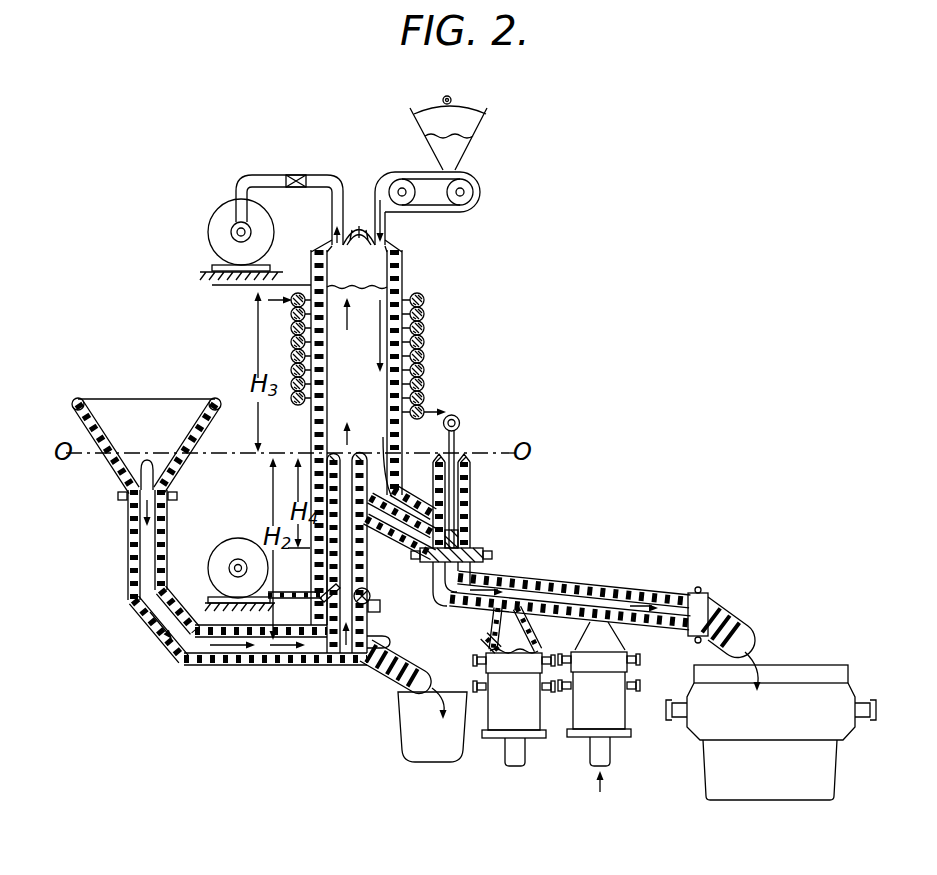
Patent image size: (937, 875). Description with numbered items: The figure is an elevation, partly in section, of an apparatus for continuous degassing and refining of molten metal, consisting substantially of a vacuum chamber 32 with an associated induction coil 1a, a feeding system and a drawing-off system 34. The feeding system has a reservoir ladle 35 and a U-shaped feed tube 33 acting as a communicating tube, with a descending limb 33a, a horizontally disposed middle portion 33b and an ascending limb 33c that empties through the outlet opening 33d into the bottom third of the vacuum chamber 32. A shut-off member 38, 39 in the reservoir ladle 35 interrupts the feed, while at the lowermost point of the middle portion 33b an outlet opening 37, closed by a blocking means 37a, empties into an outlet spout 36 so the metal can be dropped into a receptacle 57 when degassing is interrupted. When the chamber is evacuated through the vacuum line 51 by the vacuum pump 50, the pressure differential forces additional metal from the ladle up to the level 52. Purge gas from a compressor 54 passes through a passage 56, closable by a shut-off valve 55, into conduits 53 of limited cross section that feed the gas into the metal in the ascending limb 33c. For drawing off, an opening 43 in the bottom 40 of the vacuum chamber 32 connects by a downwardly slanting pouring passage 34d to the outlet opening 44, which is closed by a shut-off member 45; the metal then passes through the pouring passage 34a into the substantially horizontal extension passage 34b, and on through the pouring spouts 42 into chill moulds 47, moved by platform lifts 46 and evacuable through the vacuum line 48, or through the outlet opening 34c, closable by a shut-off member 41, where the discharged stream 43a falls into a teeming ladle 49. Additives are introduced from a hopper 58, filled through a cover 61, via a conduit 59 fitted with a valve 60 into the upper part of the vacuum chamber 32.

The induction coil 1a is at (425, 353).
The vacuum chamber 32 is at (404, 326).
The feed tube 33 is at (170, 590).
The limb 33a is at (130, 548).
The horizontally disposed middle portion 33b is at (245, 667).
The ascending limb 33c is at (340, 455).
The outlet opening 33d is at (320, 412).
The drawing-off system 34 is at (575, 580).
The pouring passage 34a is at (484, 553).
The extension passage 34b is at (612, 593).
The outlet opening 34c is at (698, 592).
The downwardly slanting pouring passage 34d is at (405, 485).
The reservoir ladle 35 is at (162, 399).
The outlet spout 36 is at (412, 656).
The outlet opening 37 is at (380, 610).
The blocking means 37a is at (386, 640).
The shut-off member 38 is at (158, 470).
The shut-off device 39 is at (170, 492).
The bottom of the vacuum chamber 40 is at (380, 530).
The shut-off member 41 is at (714, 614).
The pouring spout 42 is at (522, 636).
The opening 43 is at (456, 523).
The discharge stream 43a is at (755, 640).
The outlet opening 44 is at (470, 537).
The shut-off member 45 is at (470, 490).
The platform lift 46 is at (538, 748).
The chill mould 47 is at (574, 710).
The vacuum line 48 is at (477, 638).
The teeming ladle 49 is at (812, 667).
The vacuum pump 50 is at (262, 235).
The vacuum line 51 is at (334, 205).
The level 52 is at (357, 287).
The conduit 53 is at (370, 592).
The compressor 54 is at (238, 545).
The shut-off valve 55 is at (302, 594).
The passage 56 is at (322, 600).
The receptacle 57 is at (398, 730).
The hopper 58 is at (458, 158).
The conduit 59 is at (385, 182).
The valve 60 is at (395, 228).
The cover 61 is at (468, 126).